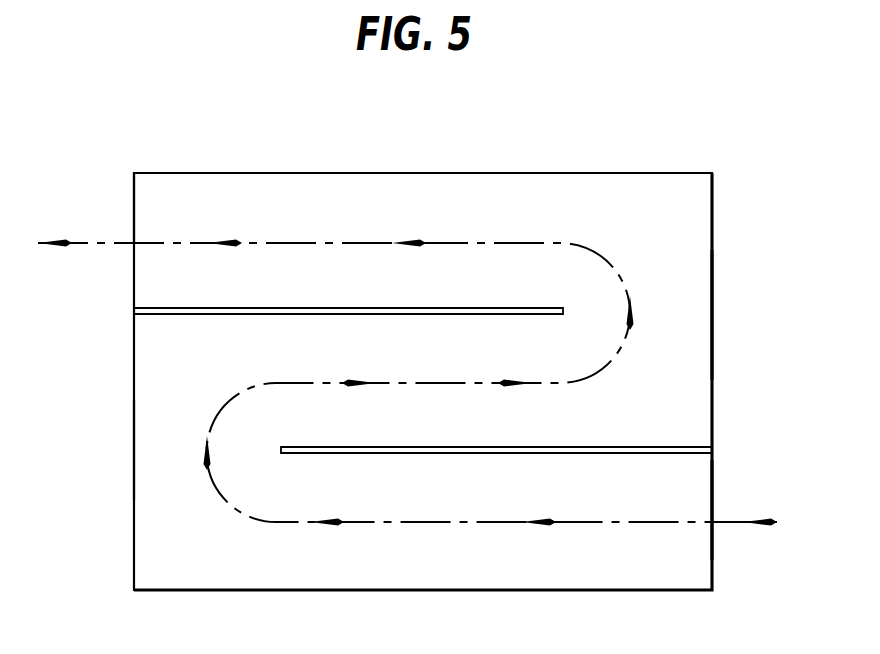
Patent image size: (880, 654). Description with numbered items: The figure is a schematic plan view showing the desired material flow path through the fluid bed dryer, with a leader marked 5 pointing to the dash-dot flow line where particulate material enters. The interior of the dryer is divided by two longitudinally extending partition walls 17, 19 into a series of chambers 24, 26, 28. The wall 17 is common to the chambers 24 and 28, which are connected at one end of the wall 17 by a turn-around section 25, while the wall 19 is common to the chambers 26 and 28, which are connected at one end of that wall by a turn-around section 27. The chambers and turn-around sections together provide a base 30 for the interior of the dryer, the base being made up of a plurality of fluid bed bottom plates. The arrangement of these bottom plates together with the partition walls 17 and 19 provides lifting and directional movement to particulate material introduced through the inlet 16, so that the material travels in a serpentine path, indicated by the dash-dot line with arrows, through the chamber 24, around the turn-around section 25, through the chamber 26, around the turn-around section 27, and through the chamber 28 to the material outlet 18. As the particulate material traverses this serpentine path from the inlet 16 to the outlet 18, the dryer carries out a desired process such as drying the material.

The fluid flow inlet 5 is at (771, 522).
The inlet 16 is at (713, 497).
The wall 17 is at (692, 445).
The material outlet 18 is at (134, 203).
The wall 19 is at (185, 316).
The chamber 24 is at (503, 571).
The turn-around section 25 is at (163, 446).
The chamber 26 is at (457, 367).
The turn-around section 27 is at (692, 318).
The chamber 28 is at (465, 207).
The base 30 is at (604, 196).